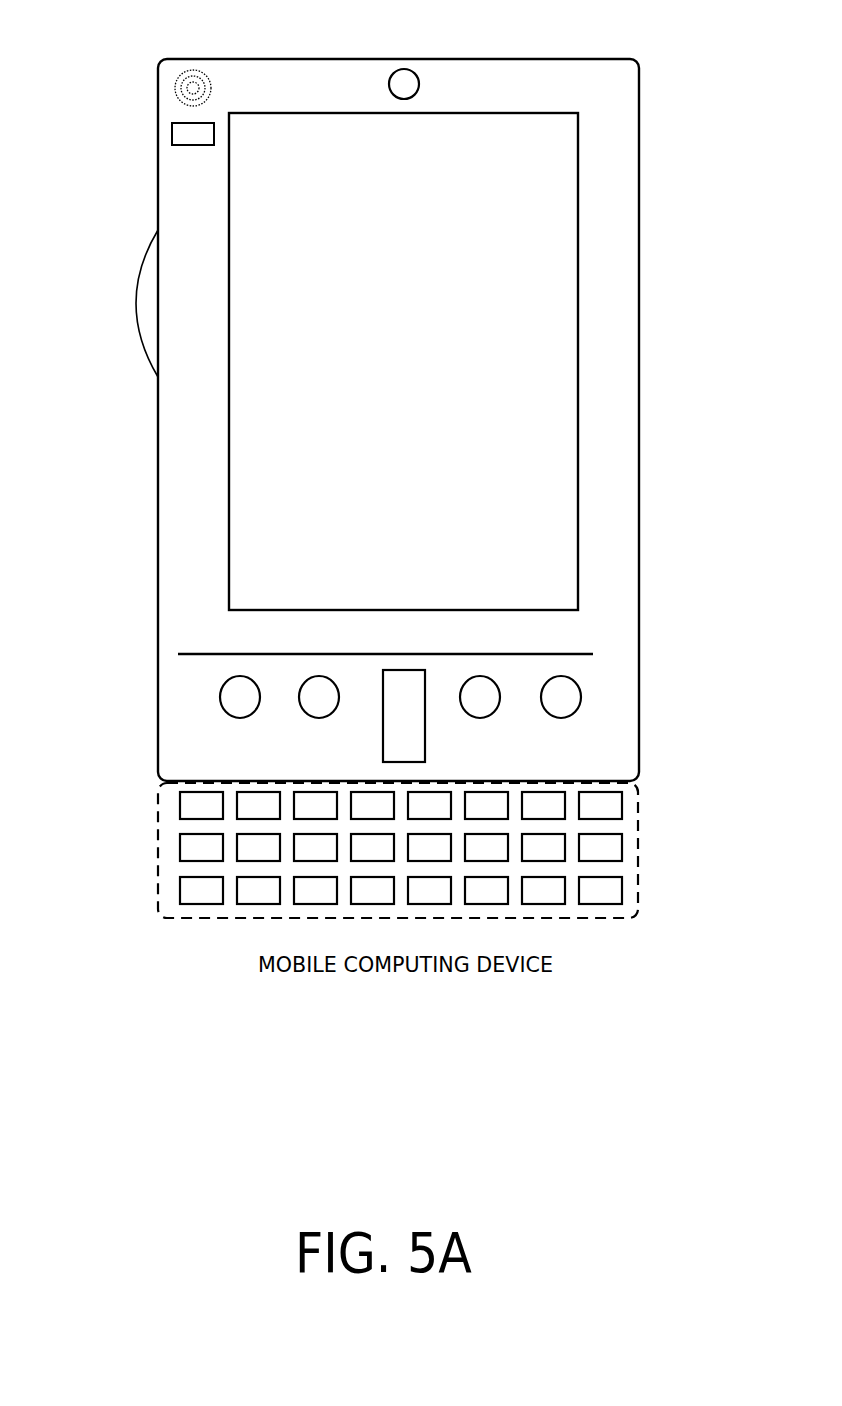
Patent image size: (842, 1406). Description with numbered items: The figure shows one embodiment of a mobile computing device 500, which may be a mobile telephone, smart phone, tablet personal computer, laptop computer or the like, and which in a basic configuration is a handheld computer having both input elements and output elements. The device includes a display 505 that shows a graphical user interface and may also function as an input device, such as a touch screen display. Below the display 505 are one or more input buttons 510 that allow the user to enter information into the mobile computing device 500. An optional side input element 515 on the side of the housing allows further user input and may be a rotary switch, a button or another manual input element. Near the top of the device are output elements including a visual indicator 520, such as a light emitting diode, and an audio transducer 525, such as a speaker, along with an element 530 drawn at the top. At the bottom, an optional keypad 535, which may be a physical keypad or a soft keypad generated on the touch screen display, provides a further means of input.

The mobile computing device 500 is at (640, 88).
The display 505 is at (257, 453).
The input buttons 510 is at (383, 723).
The side input element 515 is at (136, 288).
The visual indicator 520 is at (175, 130).
The audio transducer 525 is at (180, 80).
The camera 530 is at (404, 69).
The keypad 535 is at (170, 850).